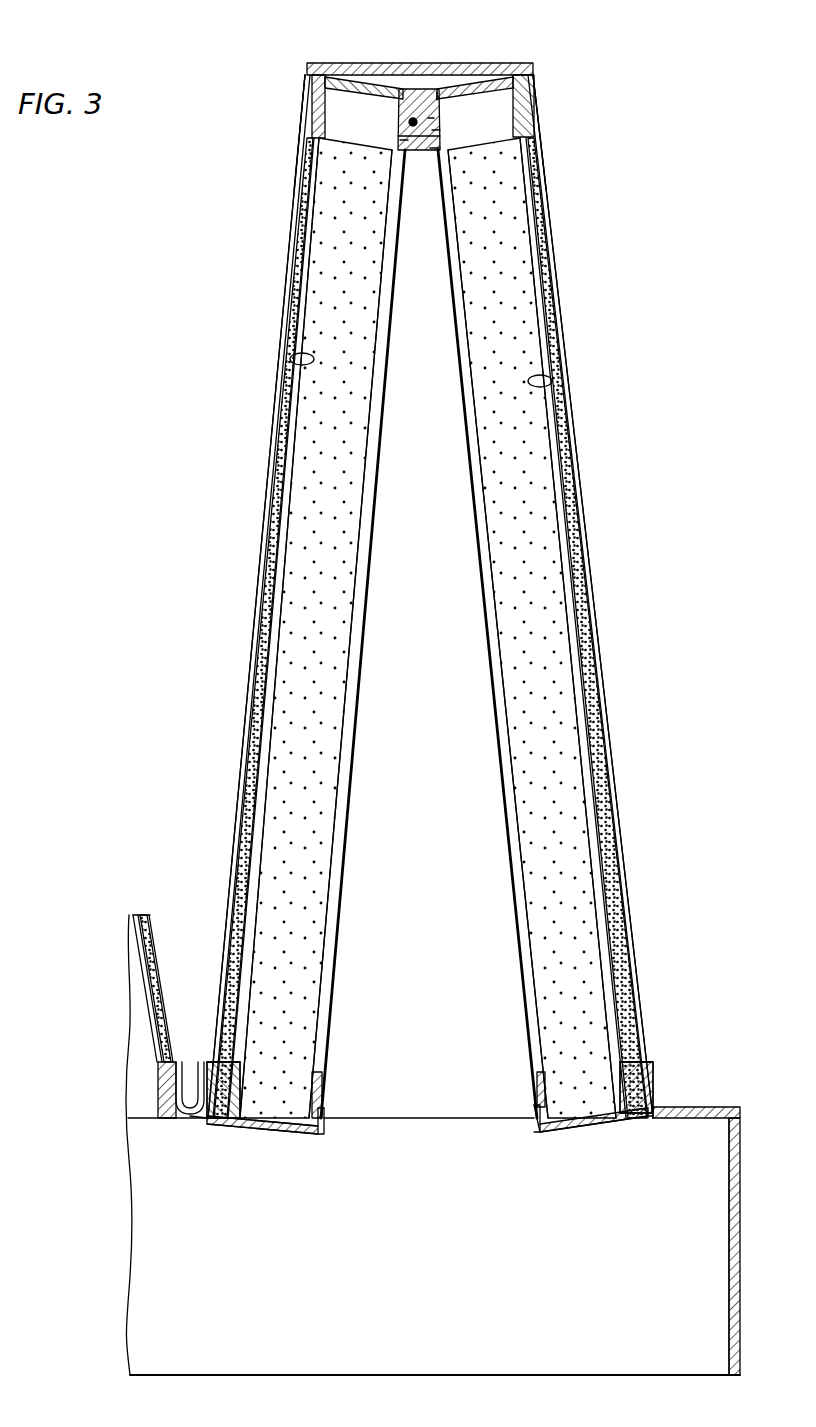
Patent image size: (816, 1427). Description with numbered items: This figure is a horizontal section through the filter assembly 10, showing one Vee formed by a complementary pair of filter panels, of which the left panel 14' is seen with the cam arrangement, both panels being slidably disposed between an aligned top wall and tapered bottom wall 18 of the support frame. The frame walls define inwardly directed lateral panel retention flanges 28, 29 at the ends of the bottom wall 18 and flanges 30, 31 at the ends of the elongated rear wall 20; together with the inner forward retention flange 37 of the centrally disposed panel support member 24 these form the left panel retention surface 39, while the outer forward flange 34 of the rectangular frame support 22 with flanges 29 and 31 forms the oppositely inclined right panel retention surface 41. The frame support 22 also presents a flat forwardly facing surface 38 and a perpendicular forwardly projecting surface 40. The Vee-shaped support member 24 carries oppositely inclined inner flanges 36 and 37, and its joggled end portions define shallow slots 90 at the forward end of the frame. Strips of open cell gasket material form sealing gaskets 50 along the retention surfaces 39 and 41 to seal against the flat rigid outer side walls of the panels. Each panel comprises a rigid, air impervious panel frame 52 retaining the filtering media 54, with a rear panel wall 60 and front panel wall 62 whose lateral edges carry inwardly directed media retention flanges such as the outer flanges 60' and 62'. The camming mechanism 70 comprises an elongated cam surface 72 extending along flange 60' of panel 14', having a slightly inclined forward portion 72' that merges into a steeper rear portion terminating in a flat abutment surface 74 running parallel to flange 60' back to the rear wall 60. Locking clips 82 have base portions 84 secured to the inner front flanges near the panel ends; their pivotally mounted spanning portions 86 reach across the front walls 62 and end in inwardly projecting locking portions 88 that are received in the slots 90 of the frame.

The filter assembly 10 is at (548, 50).
The filter panel 14' is at (292, 628).
The tapered bottom wall 18 is at (425, 1120).
The rear wall 20 is at (330, 63).
The rectangular frame support 22 is at (760, 1075).
The panel support member 24 is at (188, 1120).
The lateral panel retention flange 28 is at (284, 322).
The lateral panel retention flange 29 is at (560, 322).
The lateral panel retention flange 30 is at (305, 130).
The lateral panel retention flange 31 is at (538, 125).
The outer forward lateral panel retention flange 34 is at (650, 1085).
The inner forward lateral panel retention flange 36 is at (165, 1058).
The inner forward lateral panel retention flange 37 is at (206, 1052).
The forwardly facing rectangular surface 38 is at (741, 1155).
The left panel retention surface 39 is at (300, 360).
The forwardly projecting rectangular surface 40 is at (728, 1298).
The right panel retention surface 41 is at (545, 382).
The sealing gasket 50 is at (273, 430).
The panel frame 52 is at (275, 490).
The filtering media 54 is at (464, 262).
The rear panel wall 60 is at (424, 58).
The media retention flange 60' is at (435, 106).
The front panel wall 62 is at (262, 1163).
The media retention flange 62' is at (430, 1075).
The camming mechanism 70 is at (416, 82).
The cam surface 72 is at (459, 125).
The forward portion of cam surface 72' is at (470, 151).
The abutment surface 74 is at (442, 92).
The locking clip 82 is at (293, 1143).
The base portion 84 is at (324, 1110).
The spanning portion 86 is at (312, 1140).
The locking portion 88 is at (236, 1090).
The locking clip receiving slot 90 is at (170, 1120).